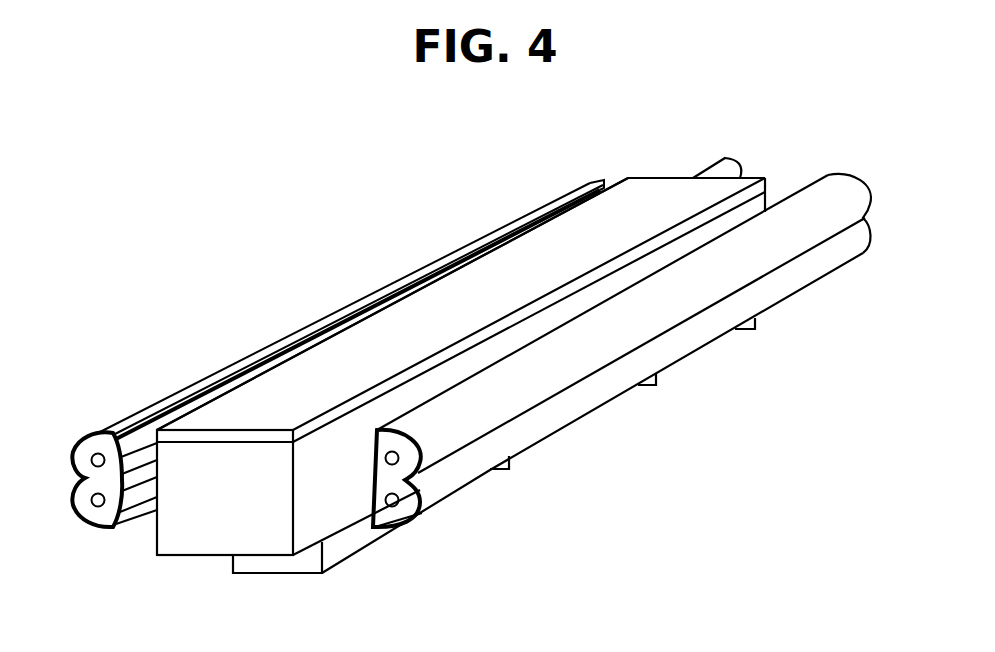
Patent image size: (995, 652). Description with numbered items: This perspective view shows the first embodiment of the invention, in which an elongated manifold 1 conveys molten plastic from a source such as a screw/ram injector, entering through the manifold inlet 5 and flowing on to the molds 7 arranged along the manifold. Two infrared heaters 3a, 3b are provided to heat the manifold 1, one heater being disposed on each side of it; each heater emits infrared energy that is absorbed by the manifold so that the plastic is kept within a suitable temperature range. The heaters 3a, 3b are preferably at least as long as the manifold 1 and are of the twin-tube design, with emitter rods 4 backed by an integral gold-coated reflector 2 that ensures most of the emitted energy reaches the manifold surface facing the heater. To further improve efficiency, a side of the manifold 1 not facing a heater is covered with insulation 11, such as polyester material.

The manifold 1 is at (207, 546).
The gold-coated reflector 2 is at (84, 440).
The infrared heater 3a is at (597, 188).
The infrared heater 3b is at (868, 204).
The emitter rods 4 is at (90, 461).
The manifold inlet 5 is at (731, 161).
The molds 7 is at (270, 574).
The insulation 11 is at (238, 398).